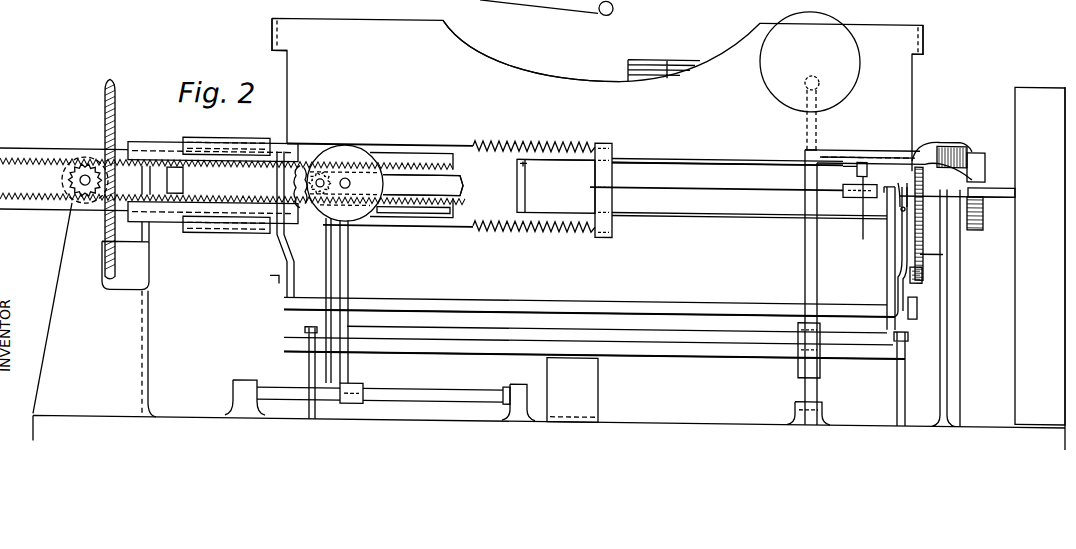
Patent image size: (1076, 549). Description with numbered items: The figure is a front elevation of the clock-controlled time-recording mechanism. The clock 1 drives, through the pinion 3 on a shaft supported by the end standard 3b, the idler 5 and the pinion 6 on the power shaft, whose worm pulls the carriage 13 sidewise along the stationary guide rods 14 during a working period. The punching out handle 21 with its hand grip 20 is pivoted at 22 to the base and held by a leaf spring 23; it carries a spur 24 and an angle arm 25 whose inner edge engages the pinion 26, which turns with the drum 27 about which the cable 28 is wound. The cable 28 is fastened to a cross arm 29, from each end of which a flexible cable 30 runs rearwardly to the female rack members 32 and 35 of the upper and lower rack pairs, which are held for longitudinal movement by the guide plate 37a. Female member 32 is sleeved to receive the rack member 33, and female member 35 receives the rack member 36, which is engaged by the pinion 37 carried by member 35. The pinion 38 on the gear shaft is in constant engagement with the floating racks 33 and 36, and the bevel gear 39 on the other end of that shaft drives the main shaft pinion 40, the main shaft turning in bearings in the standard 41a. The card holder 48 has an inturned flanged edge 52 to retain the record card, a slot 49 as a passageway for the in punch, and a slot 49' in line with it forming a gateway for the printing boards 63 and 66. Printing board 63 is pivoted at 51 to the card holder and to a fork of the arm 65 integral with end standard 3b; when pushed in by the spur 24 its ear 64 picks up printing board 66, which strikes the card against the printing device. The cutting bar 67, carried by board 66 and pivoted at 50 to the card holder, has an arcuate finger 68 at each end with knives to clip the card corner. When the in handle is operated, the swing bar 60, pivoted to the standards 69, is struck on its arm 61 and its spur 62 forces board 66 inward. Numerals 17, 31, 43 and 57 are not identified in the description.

The clock 1 is at (1040, 256).
The pinion 3 is at (924, 197).
The end standard 3b is at (918, 140).
The idler 5 is at (921, 254).
The pinion 6 is at (922, 265).
The carriage 13 is at (349, 271).
The guide rods 14 is at (437, 380).
The inlet dial 17 is at (355, 140).
The hand grip 20 is at (762, 62).
The out handle 21 is at (803, 238).
The pivot 22 is at (793, 402).
The leaf spring 23 is at (795, 360).
The spur 24 is at (815, 194).
The angle arm 25 is at (969, 141).
The pinion 26 is at (952, 138).
The drum 27 is at (984, 172).
The cable 28 is at (740, 160).
The cross arm 29 is at (612, 172).
The flexible cables 30 is at (453, 127).
The spring 31 is at (530, 134).
The female rack member 32 is at (162, 158).
The rack member 33 is at (50, 154).
The female rack member 35 is at (167, 220).
The rack member 36 is at (55, 209).
The pinion 37 is at (318, 210).
The guide plate 37a is at (189, 181).
The pinion 38 is at (85, 193).
The bevel gear 39 is at (63, 178).
The main shaft pinion 40 is at (105, 102).
The standard 41a is at (152, 311).
The bracket 43 is at (657, 52).
The card holder 48 is at (500, 64).
The slot 49 is at (440, 184).
The slot 49' is at (749, 228).
The pivot 50 is at (295, 166).
The pivot 51 is at (520, 159).
The inturned flanged edge 52 is at (268, 23).
The slide bar 57 is at (390, 178).
The swing bar 60 is at (634, 330).
The arm 61 is at (418, 210).
The spur 62 is at (888, 194).
The printing board 63 is at (556, 186).
The ear 64 is at (847, 186).
The arm 65 is at (905, 139).
The printing board 66 is at (870, 201).
The cutting bar 67 is at (683, 297).
The arcuate finger 68 is at (270, 275).
The standards 69 is at (311, 363).